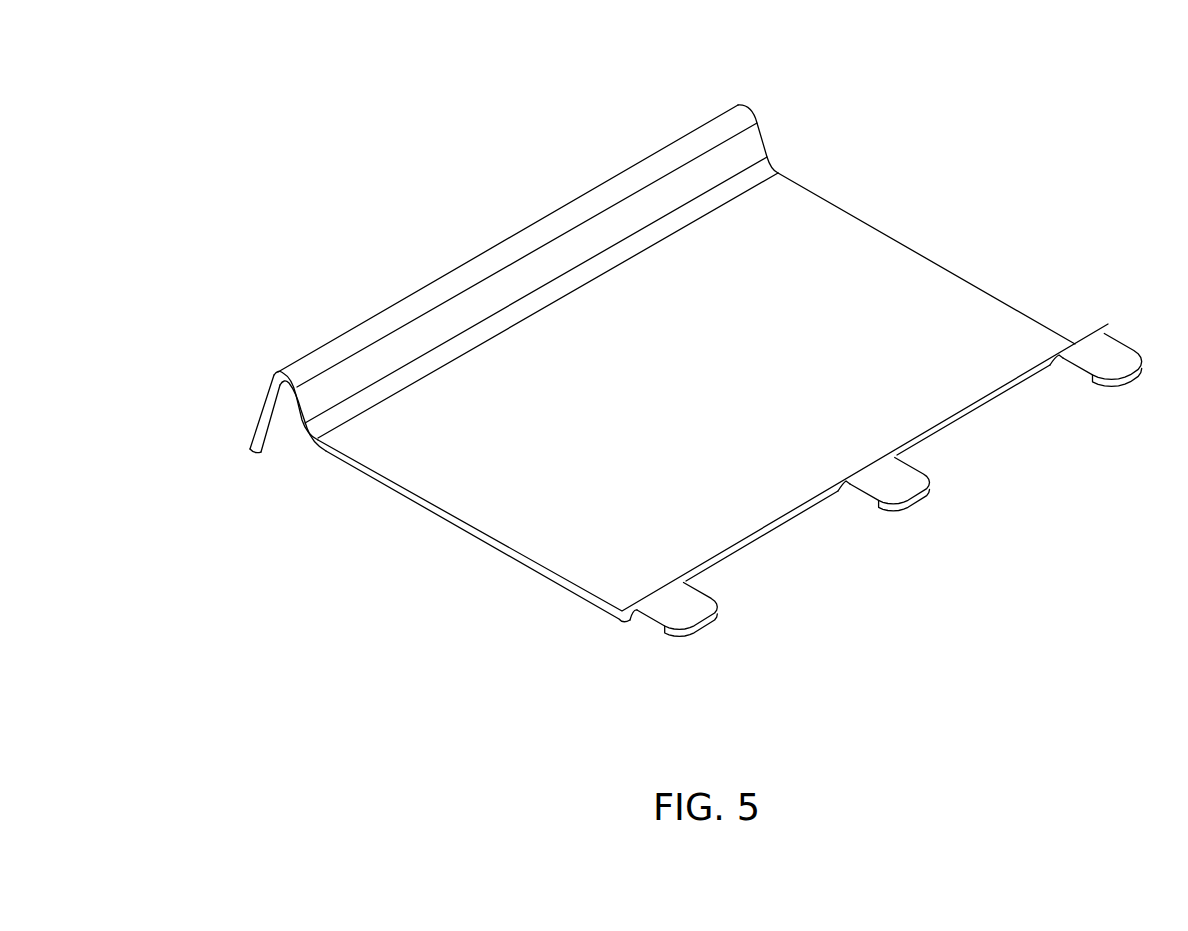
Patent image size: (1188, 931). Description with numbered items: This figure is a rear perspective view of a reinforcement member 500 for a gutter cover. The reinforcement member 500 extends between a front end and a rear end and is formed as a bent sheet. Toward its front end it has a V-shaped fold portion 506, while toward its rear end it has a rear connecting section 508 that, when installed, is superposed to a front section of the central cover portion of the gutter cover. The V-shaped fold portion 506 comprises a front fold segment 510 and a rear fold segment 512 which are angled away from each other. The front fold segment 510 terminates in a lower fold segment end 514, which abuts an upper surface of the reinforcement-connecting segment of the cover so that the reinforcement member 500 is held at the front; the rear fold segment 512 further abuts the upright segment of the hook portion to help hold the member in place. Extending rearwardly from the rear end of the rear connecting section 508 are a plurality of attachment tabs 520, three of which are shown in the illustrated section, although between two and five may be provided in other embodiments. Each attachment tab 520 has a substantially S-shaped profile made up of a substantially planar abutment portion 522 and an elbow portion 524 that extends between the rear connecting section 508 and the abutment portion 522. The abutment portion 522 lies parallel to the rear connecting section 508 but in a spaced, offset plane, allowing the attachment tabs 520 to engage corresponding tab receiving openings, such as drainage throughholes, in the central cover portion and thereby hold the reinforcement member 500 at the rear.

The reinforcement member 500 is at (440, 117).
The V-shaped fold portion 506 is at (283, 339).
The rear connecting section 508 is at (923, 303).
The front fold segment 510 is at (265, 405).
The rear fold segment 512 is at (338, 385).
The lower fold segment end 514 is at (256, 454).
The attachment tabs 520 is at (1076, 389).
The abutment portion 522 is at (697, 600).
The elbow portion 524 is at (634, 620).